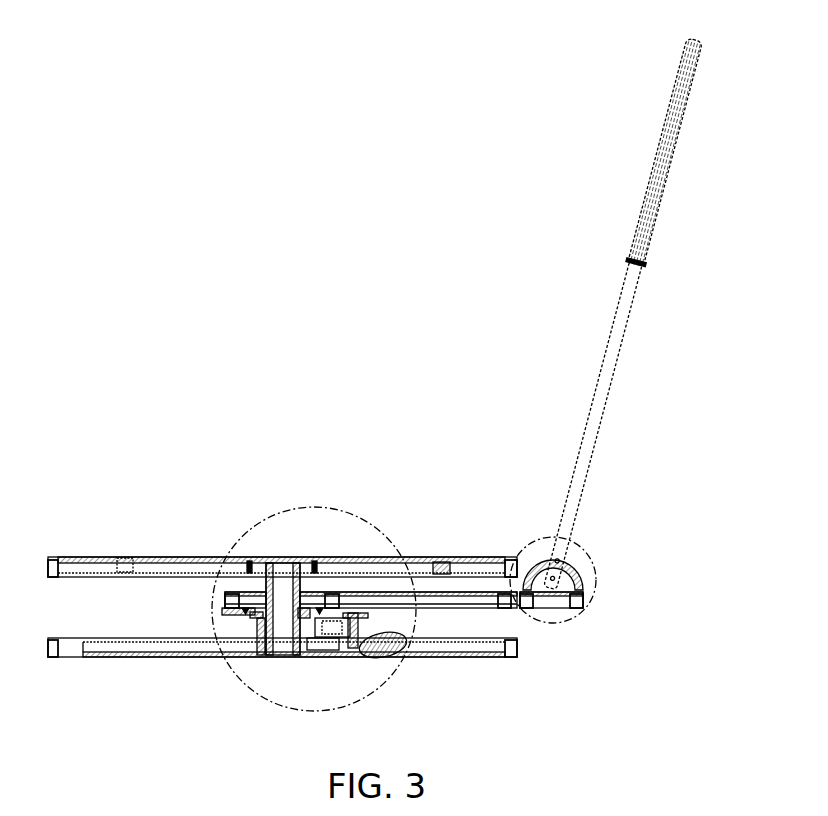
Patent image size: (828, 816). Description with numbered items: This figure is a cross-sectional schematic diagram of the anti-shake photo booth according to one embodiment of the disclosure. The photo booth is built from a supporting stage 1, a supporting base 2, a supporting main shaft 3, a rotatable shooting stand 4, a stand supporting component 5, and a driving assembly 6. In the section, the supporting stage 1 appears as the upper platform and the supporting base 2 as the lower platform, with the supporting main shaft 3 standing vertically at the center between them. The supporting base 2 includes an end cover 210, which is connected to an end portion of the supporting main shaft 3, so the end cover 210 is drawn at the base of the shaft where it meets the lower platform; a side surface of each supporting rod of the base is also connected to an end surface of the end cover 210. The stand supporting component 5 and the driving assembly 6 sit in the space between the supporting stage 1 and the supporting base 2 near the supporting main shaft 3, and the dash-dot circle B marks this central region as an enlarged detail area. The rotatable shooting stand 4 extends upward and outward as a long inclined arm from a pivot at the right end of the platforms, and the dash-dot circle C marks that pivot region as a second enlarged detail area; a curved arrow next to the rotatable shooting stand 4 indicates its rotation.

The supporting stage 1 is at (187, 560).
The supporting base 2 is at (83, 643).
The supporting main shaft 3 is at (297, 647).
The rotatable shooting stand 4 is at (548, 452).
The stand supporting component 5 is at (258, 637).
The driving assembly 6 is at (380, 657).
The end cover 210 is at (248, 647).
The detail region B is at (360, 517).
The detail region C is at (533, 540).